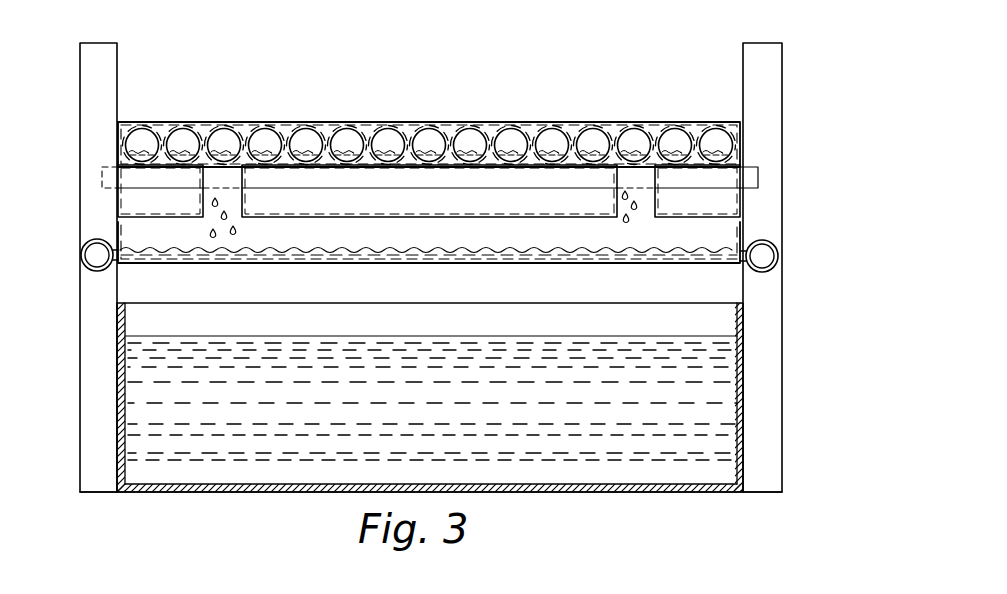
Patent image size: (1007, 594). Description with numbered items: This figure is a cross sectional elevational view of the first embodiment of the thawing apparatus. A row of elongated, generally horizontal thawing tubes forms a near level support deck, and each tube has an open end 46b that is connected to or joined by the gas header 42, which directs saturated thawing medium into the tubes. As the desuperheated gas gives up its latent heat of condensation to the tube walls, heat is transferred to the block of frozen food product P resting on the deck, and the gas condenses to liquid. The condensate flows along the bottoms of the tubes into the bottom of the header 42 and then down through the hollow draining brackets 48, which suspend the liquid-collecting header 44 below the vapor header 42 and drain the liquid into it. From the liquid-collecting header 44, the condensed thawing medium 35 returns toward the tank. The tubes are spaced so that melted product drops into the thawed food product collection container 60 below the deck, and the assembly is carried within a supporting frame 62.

The condensed thawing medium 35 is at (305, 148).
The gas header 42 is at (735, 120).
The liquid-collecting header 44 is at (678, 262).
The open end 46b is at (693, 122).
The hollow draining brackets 48 is at (663, 198).
The thawed food product collection container 60 is at (720, 328).
The frame post 62 is at (782, 427).
The block of frozen food product P is at (172, 415).